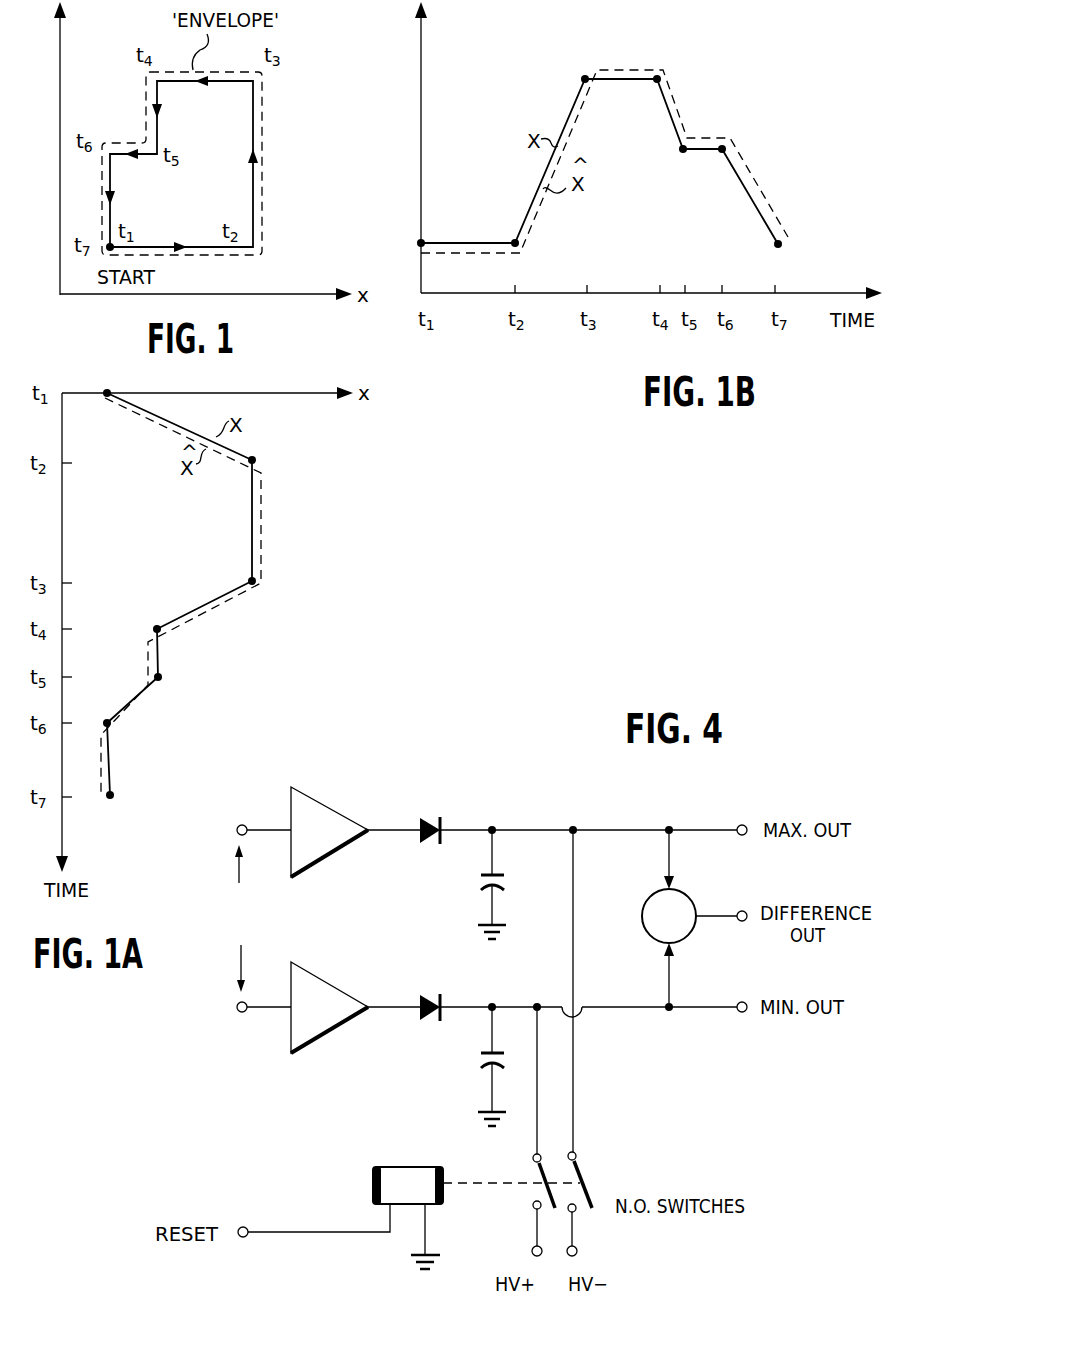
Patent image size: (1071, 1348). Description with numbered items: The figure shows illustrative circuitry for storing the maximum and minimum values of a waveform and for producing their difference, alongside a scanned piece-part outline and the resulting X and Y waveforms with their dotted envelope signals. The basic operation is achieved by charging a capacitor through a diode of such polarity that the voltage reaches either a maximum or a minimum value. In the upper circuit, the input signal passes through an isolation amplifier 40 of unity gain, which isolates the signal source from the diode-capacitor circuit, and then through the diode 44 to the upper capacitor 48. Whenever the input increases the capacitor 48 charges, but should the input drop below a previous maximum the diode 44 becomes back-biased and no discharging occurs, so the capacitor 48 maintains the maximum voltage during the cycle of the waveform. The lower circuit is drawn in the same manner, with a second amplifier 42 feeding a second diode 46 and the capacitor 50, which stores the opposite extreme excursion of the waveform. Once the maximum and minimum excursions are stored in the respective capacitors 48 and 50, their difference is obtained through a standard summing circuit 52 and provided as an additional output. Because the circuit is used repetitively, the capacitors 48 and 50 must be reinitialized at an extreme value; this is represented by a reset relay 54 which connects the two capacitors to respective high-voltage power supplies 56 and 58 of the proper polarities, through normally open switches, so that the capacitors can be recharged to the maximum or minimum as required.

The isolation amplifier 40 is at (327, 820).
The amplifier (min channel) 42 is at (327, 1000).
The diode 44 is at (427, 823).
The diode 46 is at (427, 1000).
The upper capacitor 48 is at (500, 878).
The capacitor 50 is at (482, 1055).
The summing circuit 52 is at (689, 921).
The reset relay 54 is at (398, 1178).
The high-voltage power supply 56 is at (583, 1177).
The high-voltage power supply 58 is at (541, 1175).